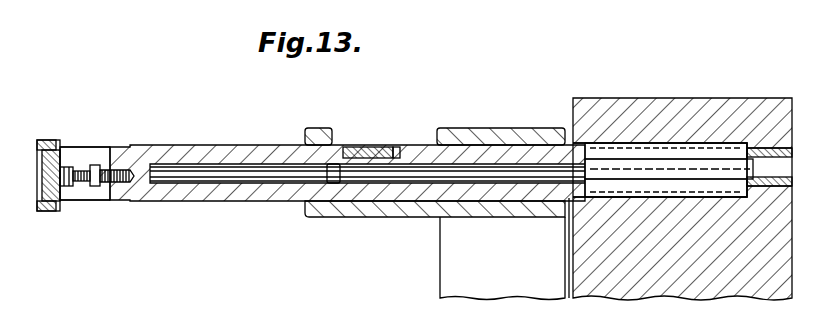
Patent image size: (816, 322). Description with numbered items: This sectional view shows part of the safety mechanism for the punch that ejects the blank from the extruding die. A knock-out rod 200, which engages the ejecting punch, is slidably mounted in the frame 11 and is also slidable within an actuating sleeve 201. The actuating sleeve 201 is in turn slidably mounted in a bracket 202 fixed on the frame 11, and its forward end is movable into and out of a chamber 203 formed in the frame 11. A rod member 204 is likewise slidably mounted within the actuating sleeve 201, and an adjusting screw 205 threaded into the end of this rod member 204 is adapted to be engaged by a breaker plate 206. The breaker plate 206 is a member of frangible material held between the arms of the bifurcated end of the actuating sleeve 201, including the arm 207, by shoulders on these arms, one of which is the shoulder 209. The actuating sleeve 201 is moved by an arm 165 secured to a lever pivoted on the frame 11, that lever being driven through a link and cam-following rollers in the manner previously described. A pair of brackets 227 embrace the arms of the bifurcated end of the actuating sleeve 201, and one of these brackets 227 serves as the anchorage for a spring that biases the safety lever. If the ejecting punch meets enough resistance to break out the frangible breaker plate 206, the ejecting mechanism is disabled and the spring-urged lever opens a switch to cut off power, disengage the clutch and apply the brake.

The frame 11 is at (678, 276).
The arm 165 is at (363, 152).
The knock-out rod 200 is at (653, 166).
The actuating sleeve 201 is at (268, 201).
The bracket 202 is at (433, 210).
The chamber 203 is at (608, 141).
The rod member 204 is at (186, 164).
The adjusting screw 205 is at (83, 170).
The breaker plate 206 is at (63, 188).
The arm 207 is at (70, 152).
The shoulder 209 is at (48, 150).
The bracket 227 is at (39, 140).